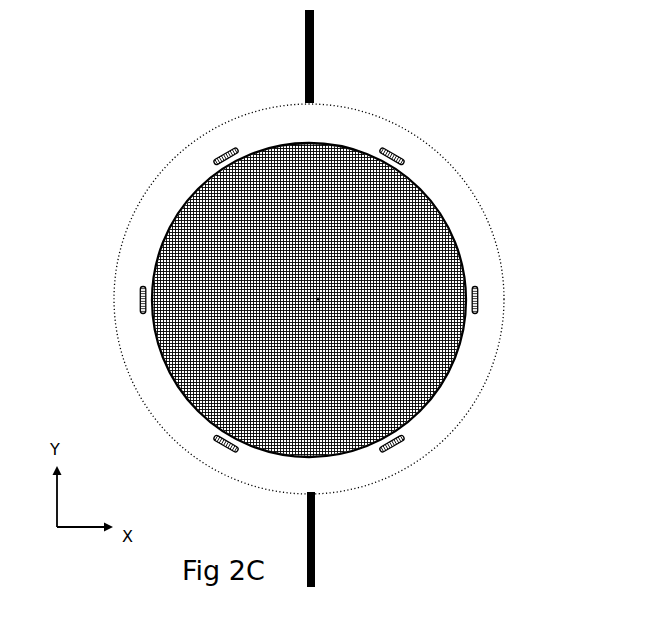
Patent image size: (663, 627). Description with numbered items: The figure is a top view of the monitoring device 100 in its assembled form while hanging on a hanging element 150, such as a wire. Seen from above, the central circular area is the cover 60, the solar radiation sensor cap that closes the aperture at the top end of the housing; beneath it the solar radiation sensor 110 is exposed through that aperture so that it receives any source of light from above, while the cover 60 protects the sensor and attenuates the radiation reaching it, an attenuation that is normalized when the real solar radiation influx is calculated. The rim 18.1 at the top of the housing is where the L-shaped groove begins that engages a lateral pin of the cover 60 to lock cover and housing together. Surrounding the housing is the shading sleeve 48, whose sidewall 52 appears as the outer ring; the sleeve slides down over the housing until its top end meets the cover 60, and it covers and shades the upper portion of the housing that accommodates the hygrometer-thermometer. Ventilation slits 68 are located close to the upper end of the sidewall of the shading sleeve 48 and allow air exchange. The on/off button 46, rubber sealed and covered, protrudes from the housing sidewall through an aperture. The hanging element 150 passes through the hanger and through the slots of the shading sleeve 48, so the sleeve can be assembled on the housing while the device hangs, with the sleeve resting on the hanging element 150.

The monitoring device 100 is at (351, 299).
The sidewall 52 is at (475, 225).
The shading sleeve 48 is at (474, 430).
The rim 18.1 is at (210, 391).
The cover 60 is at (175, 215).
The on/off button 46 is at (173, 297).
The ventilation slits 68 is at (395, 151).
The solar radiation sensor 110 is at (320, 298).
The hanging element 150 is at (314, 38).